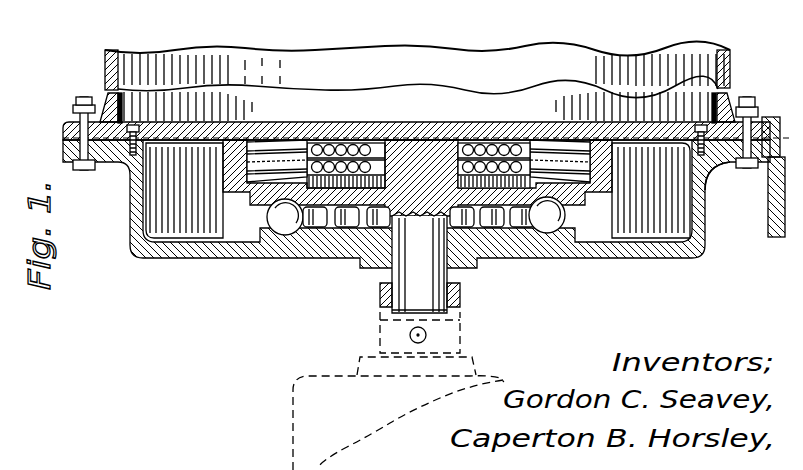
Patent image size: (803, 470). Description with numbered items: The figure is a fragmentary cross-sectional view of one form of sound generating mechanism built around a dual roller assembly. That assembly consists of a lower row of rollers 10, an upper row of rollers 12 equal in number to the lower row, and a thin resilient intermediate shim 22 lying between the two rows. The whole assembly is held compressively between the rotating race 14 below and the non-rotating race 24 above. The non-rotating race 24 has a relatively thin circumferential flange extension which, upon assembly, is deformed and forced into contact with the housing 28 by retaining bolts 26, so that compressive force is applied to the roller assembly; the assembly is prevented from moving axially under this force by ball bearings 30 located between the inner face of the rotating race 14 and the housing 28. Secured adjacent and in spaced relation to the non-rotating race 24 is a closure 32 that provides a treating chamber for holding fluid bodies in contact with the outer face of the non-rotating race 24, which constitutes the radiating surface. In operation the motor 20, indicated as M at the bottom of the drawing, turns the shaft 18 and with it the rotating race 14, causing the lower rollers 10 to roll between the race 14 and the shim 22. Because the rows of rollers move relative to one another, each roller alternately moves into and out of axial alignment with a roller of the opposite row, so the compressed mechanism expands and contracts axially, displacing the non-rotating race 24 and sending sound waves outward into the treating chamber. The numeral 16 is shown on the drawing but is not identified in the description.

The lower row of rollers 10 is at (243, 173).
The upper row of rollers 12 is at (276, 148).
The rotating race 14 is at (568, 183).
The ball bearing 16 is at (484, 130).
The shaft 18 is at (424, 153).
The motor 20 is at (337, 392).
The intermediate shim 22 is at (536, 128).
The non-rotating race 24 is at (351, 128).
The retaining bolts 26 is at (712, 163).
The housing 28 is at (173, 253).
The ball bearings 30 is at (324, 224).
The closure 32 is at (110, 107).
The motor M is at (305, 417).